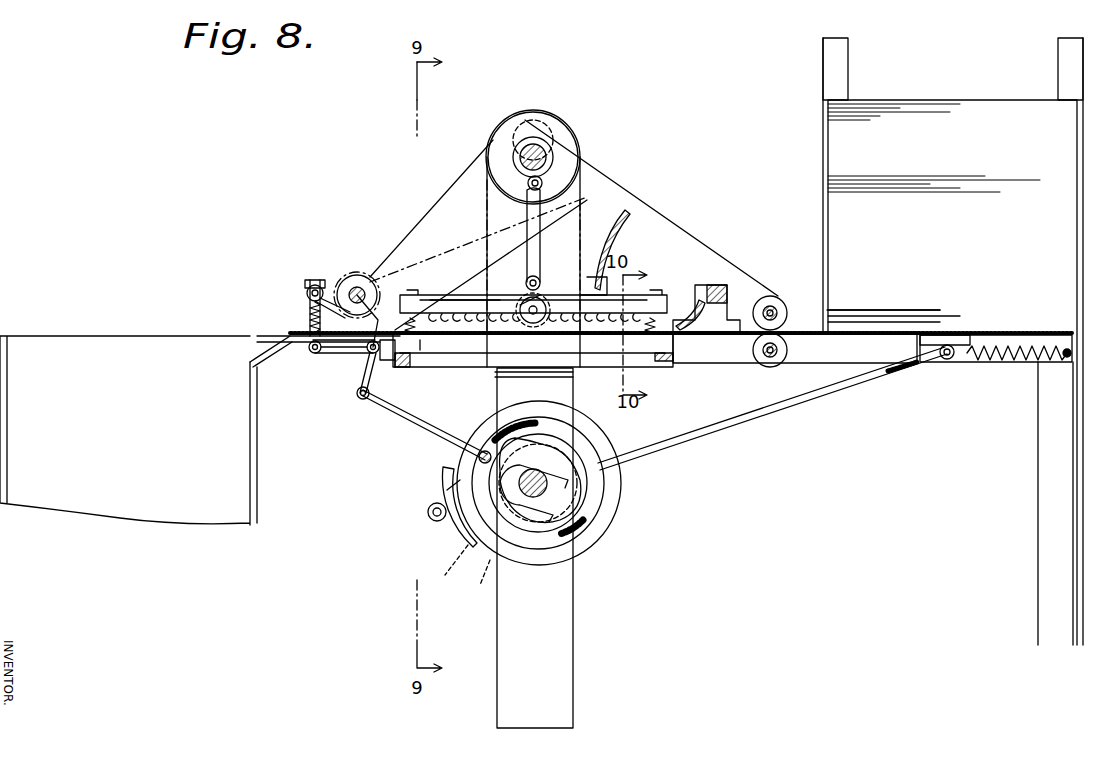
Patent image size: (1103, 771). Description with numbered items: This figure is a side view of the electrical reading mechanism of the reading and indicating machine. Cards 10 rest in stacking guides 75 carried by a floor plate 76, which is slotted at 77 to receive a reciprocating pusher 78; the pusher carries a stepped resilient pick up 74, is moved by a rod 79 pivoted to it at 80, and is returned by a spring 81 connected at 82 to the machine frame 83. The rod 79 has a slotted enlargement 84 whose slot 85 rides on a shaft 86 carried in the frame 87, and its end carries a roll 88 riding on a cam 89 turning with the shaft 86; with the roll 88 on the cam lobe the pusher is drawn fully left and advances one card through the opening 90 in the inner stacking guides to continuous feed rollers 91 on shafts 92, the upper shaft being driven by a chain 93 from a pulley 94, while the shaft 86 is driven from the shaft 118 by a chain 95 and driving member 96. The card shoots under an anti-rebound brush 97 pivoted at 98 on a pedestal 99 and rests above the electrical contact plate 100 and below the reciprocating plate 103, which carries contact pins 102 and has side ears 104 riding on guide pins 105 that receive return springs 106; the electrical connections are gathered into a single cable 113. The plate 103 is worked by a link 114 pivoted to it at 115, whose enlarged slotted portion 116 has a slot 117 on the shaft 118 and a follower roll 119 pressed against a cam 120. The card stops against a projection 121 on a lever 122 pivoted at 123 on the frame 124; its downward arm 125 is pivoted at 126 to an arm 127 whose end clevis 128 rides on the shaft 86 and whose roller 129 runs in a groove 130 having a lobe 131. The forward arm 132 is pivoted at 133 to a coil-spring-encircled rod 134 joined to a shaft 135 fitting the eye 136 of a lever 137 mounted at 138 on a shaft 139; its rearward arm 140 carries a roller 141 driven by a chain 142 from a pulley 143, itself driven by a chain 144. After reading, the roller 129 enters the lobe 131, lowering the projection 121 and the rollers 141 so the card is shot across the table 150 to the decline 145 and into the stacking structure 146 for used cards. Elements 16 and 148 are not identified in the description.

The card 10 is at (978, 100).
The frame 16 is at (430, 360).
The stepped resilient pick up 74 is at (1000, 362).
The stacking guides 75 is at (1058, 42).
The floor plate 76 is at (880, 362).
The slot 77 is at (908, 372).
The reciprocating pusher 78 is at (958, 360).
The rod 79 is at (778, 412).
The pivotal connection 80 is at (947, 360).
The return spring 81 is at (1015, 362).
The spring connection 82 is at (1062, 358).
The frame of the machine 83 is at (1038, 483).
The slotted enlargement 84 is at (479, 585).
The slot 85 is at (458, 560).
The shaft 86 is at (575, 500).
The frame 87 is at (575, 640).
The roll 88 is at (428, 517).
The cam 89 is at (443, 468).
The opening 90 is at (827, 330).
The continuous feed rollers 91 is at (765, 356).
The shafts 92 is at (780, 358).
The chain 93 is at (700, 232).
The pulley 94 is at (570, 152).
The chain 95 is at (585, 405).
The driving member 96 is at (580, 485).
The anti-rebound brush 97 is at (698, 335).
The pivot 98 is at (705, 300).
The pedestal 99 is at (720, 288).
The electrical contact plate 100 is at (478, 360).
The contact pins 102 is at (566, 290).
The reciprocating plate 103 is at (455, 295).
The side ears 104 is at (660, 318).
The guide pins 105 is at (655, 290).
The return springs 106 is at (665, 360).
The cable 113 is at (630, 212).
The link 114 is at (496, 257).
The pivotal connection 115 is at (540, 278).
The enlarged slotted portion 116 is at (540, 122).
The slot 117 is at (545, 150).
The shaft 118 is at (482, 158).
The follower roll 119 is at (545, 180).
The cam 120 is at (525, 108).
The projection 121 is at (345, 360).
The lever combination 122 is at (340, 355).
The pivot 123 is at (380, 355).
The frame 124 is at (290, 336).
The downwardly extending arm 125 is at (358, 400).
The pivotal connection 126 is at (372, 400).
The arm 127 is at (392, 455).
The end clevis 128 is at (585, 530).
The roller 129 is at (447, 490).
The groove 130 is at (580, 447).
The lobe 131 is at (520, 388).
The forward extending arm 132 is at (325, 350).
The pivotal connection 133 is at (310, 352).
The coil-spring-encircled rod 134 is at (308, 290).
The shaft 135 is at (316, 284).
The eye 136 is at (338, 275).
The lever 137 is at (378, 300).
The mounting 138 is at (375, 282).
The shaft 139 is at (365, 238).
The rearwardly extending arm 140 is at (455, 290).
The roller 141 is at (537, 322).
The chain 142 is at (520, 300).
The pulley 143 is at (300, 316).
The chain 144 is at (490, 130).
The decline 145 is at (258, 358).
The stacking structure 146 is at (258, 510).
The disc 148 is at (580, 555).
The table 150 is at (335, 395).